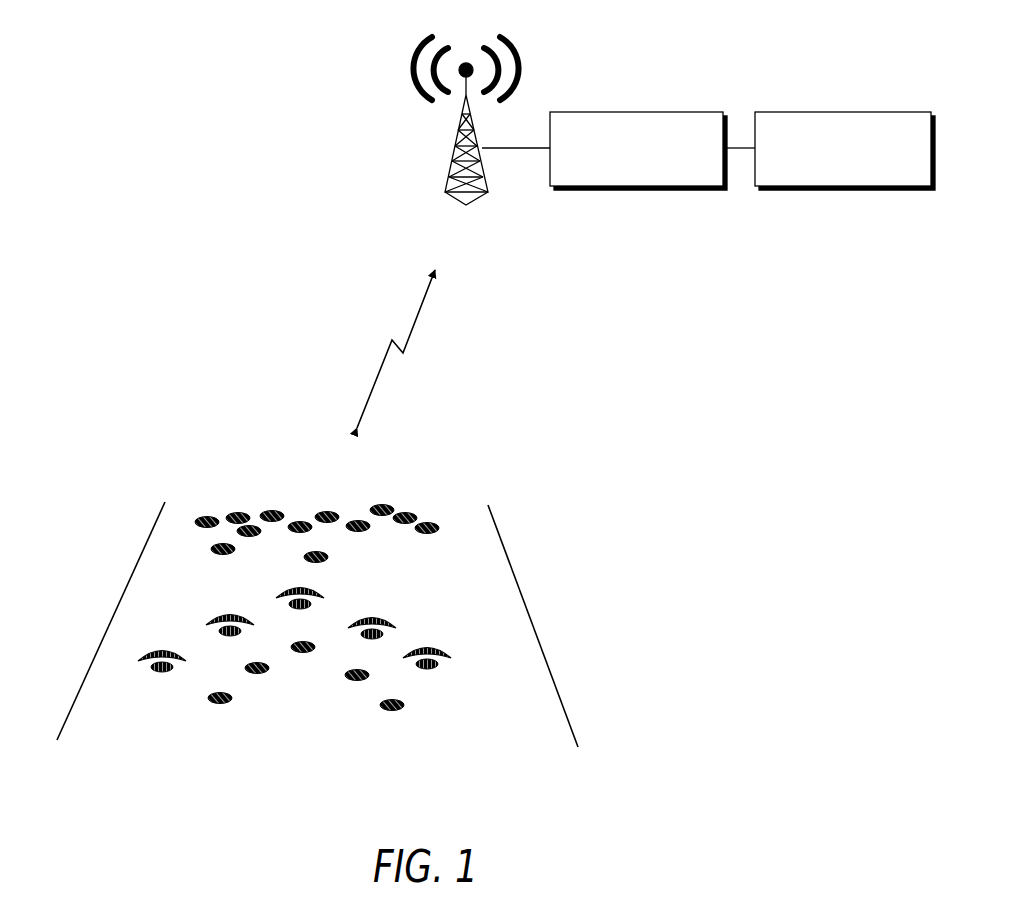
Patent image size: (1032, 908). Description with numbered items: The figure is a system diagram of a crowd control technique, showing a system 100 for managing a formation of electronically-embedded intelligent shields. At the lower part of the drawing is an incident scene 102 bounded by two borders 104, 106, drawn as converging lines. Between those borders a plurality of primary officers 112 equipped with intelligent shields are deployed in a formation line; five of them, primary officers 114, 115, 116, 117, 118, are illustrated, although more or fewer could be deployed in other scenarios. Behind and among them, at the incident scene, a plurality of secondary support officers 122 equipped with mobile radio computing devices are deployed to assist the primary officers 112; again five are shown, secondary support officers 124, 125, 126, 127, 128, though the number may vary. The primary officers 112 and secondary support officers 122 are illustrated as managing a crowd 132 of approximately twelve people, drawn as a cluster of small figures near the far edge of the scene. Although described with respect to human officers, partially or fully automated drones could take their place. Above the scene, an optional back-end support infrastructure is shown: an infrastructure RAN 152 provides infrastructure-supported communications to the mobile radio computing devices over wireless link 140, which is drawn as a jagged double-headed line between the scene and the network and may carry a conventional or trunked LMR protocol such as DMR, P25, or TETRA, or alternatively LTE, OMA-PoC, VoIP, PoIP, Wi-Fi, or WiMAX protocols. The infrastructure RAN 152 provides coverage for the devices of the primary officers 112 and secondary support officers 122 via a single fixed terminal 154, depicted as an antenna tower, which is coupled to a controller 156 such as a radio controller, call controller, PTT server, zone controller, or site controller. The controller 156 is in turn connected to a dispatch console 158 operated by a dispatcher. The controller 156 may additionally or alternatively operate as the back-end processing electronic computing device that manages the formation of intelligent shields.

The system 100 is at (88, 51).
The incident scene 102 is at (100, 465).
The border 104 is at (108, 622).
The border 106 is at (527, 606).
The primary officers 112 is at (118, 683).
The primary officer 114 is at (168, 650).
The primary officer 115 is at (230, 612).
The primary officer 116 is at (320, 590).
The primary officer 117 is at (378, 615).
The primary officer 118 is at (432, 645).
The secondary support officers 122 is at (205, 707).
The secondary support officer 124 is at (225, 704).
The secondary support officer 125 is at (262, 675).
The secondary support officer 126 is at (292, 648).
The secondary support officer 127 is at (352, 682).
The secondary support officer 128 is at (396, 712).
The crowd 132 is at (185, 527).
The wireless link 140 is at (415, 323).
The infrastructure RAN 152 is at (390, 78).
The fixed terminal 154 is at (456, 160).
The controller 156 is at (640, 112).
The dispatch console 158 is at (845, 112).